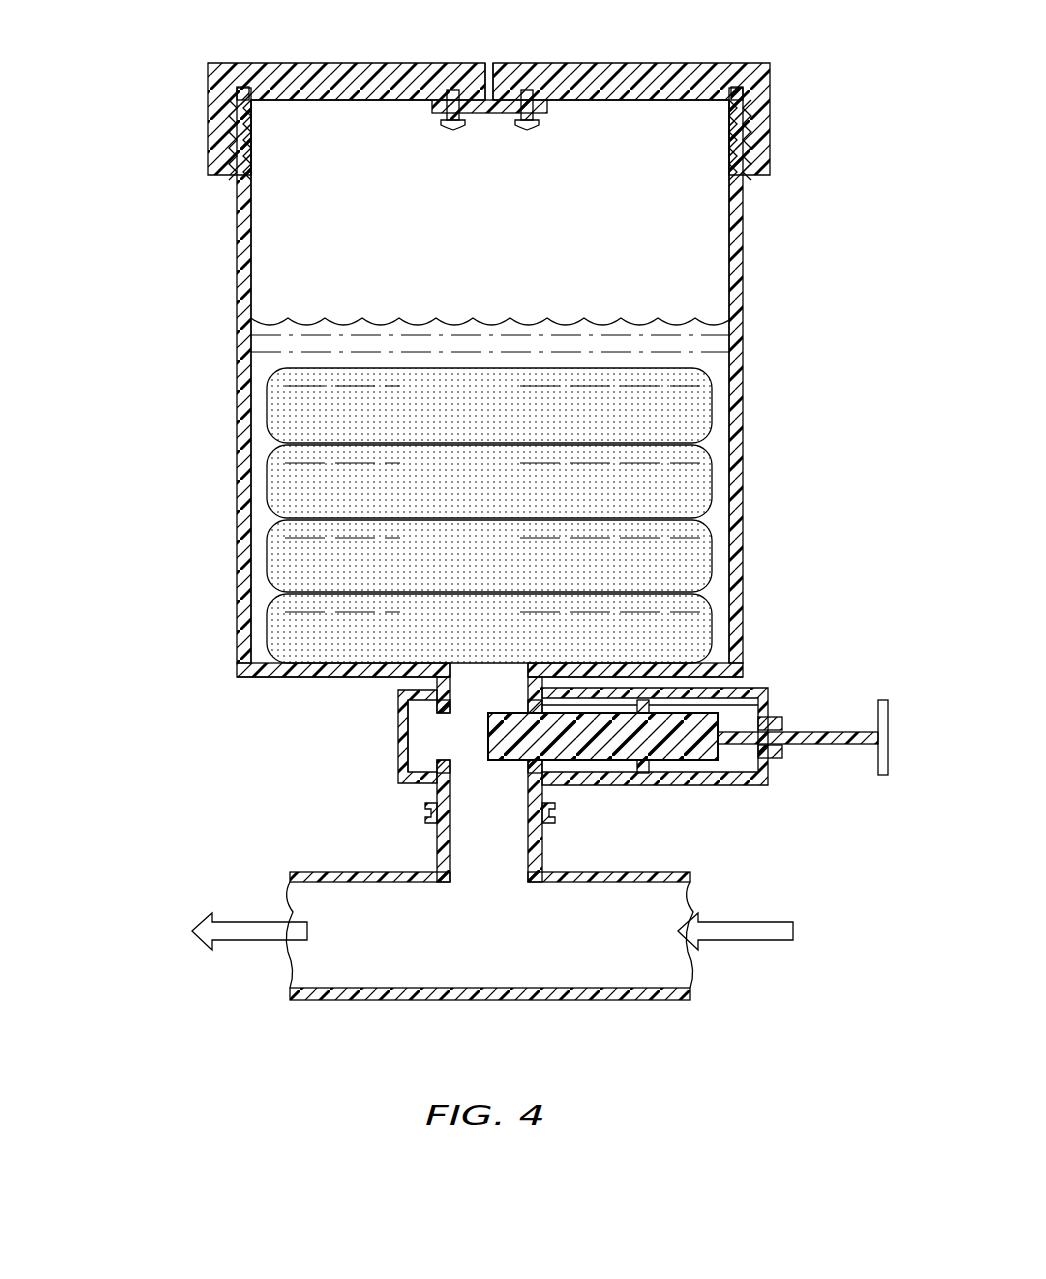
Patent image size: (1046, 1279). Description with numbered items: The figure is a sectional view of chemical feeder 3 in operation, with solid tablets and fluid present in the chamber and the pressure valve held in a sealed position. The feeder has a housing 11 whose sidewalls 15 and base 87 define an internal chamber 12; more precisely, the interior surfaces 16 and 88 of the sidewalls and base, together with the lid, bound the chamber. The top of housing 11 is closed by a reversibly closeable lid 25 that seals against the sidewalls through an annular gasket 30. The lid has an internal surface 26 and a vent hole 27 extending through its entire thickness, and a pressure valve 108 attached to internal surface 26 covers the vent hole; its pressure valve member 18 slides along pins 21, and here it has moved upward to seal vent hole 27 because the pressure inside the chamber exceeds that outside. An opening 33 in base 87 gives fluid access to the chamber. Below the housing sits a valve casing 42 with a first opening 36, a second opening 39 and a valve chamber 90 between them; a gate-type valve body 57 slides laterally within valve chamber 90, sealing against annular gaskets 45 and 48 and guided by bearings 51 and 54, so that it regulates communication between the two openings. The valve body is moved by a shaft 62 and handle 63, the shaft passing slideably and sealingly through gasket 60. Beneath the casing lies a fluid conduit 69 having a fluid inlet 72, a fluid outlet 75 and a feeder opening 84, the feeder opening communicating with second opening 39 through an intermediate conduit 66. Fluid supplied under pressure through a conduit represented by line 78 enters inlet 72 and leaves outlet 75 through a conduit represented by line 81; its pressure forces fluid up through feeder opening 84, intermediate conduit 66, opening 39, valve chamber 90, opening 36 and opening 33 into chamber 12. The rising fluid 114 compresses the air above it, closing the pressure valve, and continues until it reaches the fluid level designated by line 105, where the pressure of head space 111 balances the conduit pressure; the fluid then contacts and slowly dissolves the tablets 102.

The chemical feeder 3 is at (138, 1030).
The housing 11 is at (810, 512).
The internal chamber 12 is at (498, 264).
The sidewalls 15 is at (240, 250).
The interior surfaces of sidewalls 16 is at (252, 215).
The pressure valve member 18 is at (488, 113).
The pins 21 is at (452, 128).
The reversibly closeable lid 25 is at (397, 62).
The internal surface of lid 26 is at (330, 103).
The vent hole 27 is at (489, 63).
The annular gasket 30 is at (242, 92).
The opening in base 33 is at (400, 740).
The first opening 36 is at (465, 686).
The second opening 39 is at (430, 810).
The valve casing 42 is at (398, 770).
The annular gasket 45 is at (485, 675).
The annular gasket 48 is at (437, 775).
The bearing 51 is at (648, 765).
The bearing 54 is at (647, 705).
The valve body 57 is at (620, 760).
The gasket 60 is at (783, 724).
The shaft 62 is at (845, 744).
The handle 63 is at (886, 735).
The intermediate conduit 66 is at (437, 855).
The fluid conduit 69 is at (300, 872).
The fluid inlet 72 is at (690, 972).
The fluid outlet 75 is at (300, 962).
The line representing supply conduit 78 is at (775, 920).
The line representing removal conduit 81 is at (242, 920).
The feeder opening 84 is at (487, 878).
The base 87 is at (290, 678).
The interior surface of base 88 is at (262, 662).
The valve chamber 90 is at (483, 757).
The tablets 102 is at (700, 405).
The fluid level line 105 is at (345, 322).
The pressure valve 108 is at (458, 170).
The head space 111 is at (730, 275).
The fluid 114 is at (300, 352).